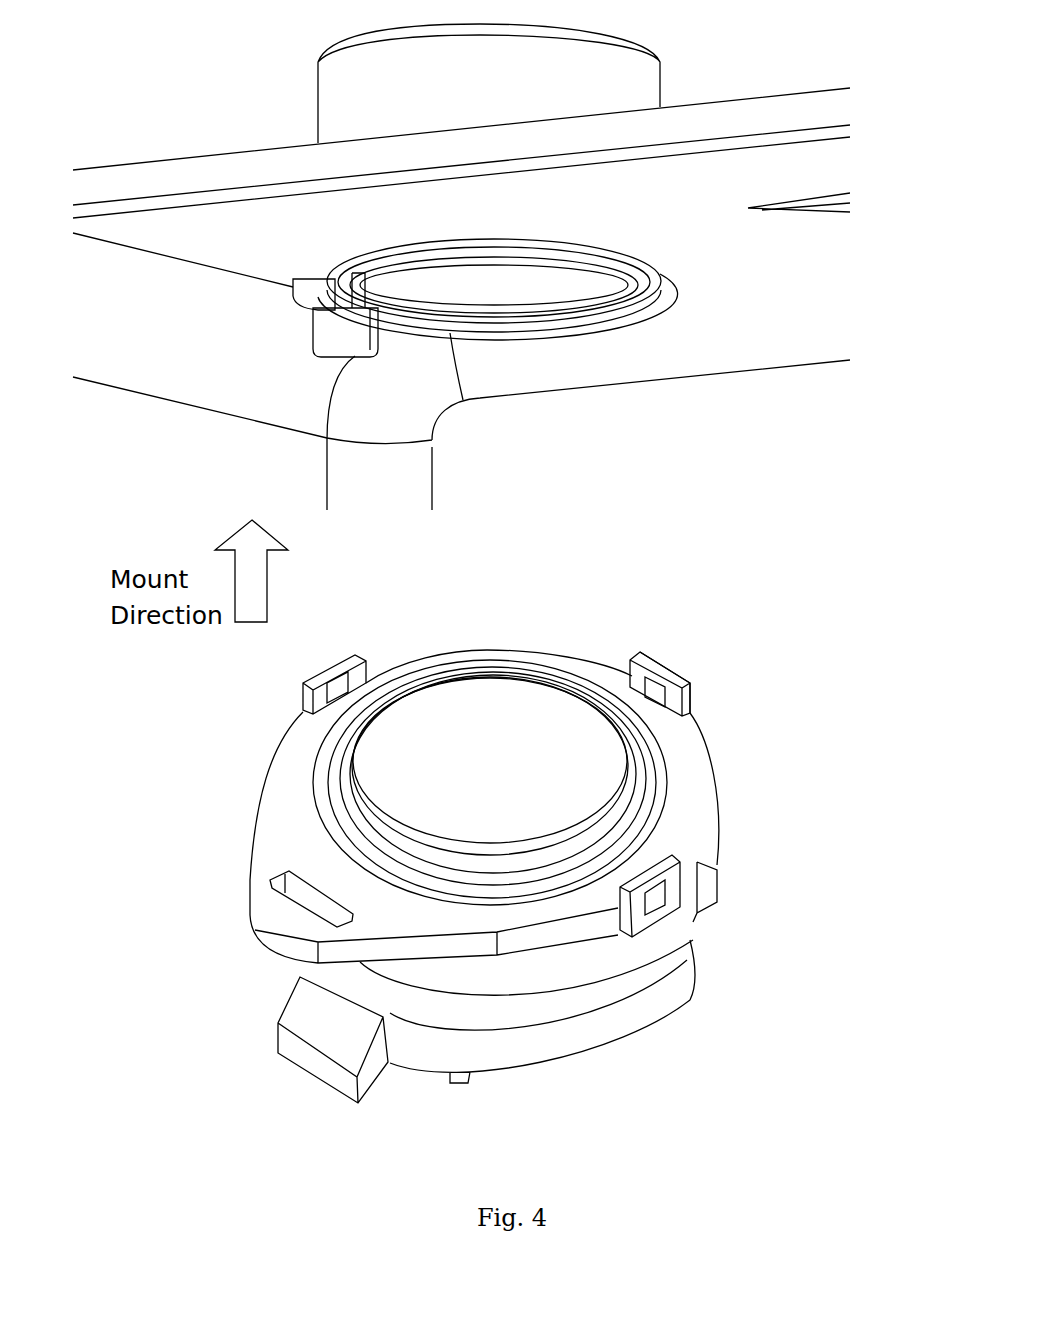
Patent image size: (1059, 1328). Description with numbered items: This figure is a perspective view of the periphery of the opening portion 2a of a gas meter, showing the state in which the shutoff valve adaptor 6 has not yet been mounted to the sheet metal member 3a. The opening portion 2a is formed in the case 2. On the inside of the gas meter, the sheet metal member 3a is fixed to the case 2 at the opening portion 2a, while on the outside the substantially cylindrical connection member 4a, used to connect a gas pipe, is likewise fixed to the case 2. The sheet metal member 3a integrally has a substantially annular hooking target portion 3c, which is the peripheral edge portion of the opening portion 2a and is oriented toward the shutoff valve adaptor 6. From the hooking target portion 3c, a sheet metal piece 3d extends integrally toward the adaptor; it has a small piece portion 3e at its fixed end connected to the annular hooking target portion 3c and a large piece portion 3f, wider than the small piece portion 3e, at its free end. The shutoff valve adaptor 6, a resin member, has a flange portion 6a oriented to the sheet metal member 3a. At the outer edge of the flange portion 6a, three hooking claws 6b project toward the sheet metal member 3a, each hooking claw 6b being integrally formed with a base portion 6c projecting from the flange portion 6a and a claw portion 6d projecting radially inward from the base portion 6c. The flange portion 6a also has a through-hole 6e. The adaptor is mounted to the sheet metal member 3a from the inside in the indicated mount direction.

The case 2 is at (141, 173).
The opening portion 2a is at (547, 289).
The sheet metal member 3a is at (603, 258).
The hooking target portion 3c is at (666, 314).
The sheet metal piece 3d is at (276, 316).
The small piece portion 3e is at (300, 307).
The large piece portion 3f is at (330, 331).
The connection member 4a is at (340, 95).
The shutoff valve adaptor 6 is at (573, 968).
The flange portion 6a is at (703, 782).
The hooking claw 6b is at (333, 663).
The base portion 6c is at (678, 698).
The claw portion 6d is at (660, 673).
The through-hole 6e is at (280, 883).